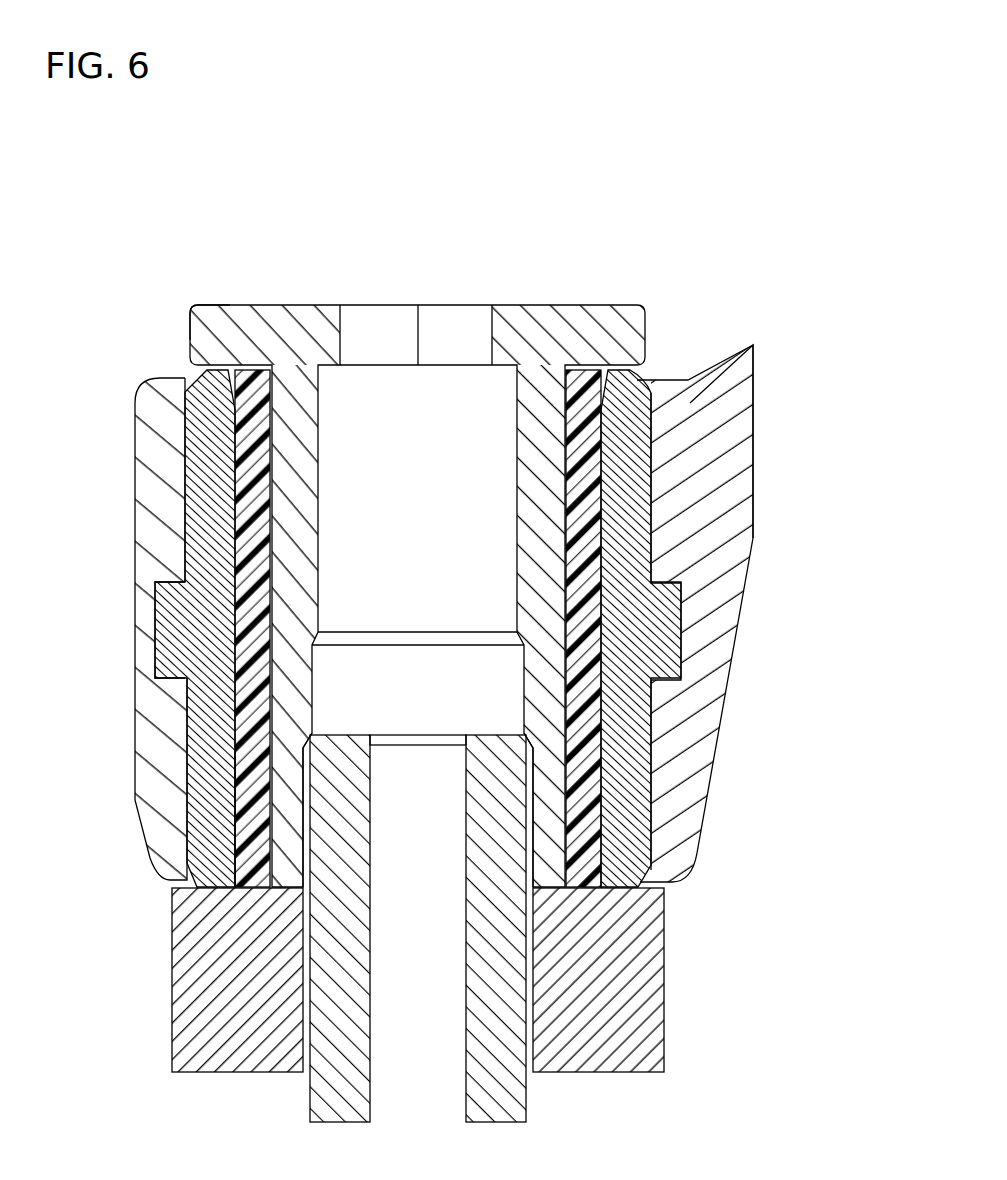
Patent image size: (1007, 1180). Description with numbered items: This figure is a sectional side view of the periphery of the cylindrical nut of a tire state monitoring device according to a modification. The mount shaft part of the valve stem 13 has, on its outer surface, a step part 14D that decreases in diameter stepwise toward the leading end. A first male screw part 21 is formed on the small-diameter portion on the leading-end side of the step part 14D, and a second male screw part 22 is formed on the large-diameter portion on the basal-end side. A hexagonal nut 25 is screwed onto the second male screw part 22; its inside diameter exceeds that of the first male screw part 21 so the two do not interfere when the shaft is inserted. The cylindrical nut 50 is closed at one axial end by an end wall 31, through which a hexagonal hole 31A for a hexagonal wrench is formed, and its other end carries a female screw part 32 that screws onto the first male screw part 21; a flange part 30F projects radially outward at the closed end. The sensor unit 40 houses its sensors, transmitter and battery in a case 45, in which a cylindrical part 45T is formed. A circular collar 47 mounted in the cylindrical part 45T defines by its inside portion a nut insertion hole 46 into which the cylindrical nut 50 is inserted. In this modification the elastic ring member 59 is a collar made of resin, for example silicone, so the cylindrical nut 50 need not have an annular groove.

The valve stem 13 is at (500, 1087).
The step part 14D is at (533, 880).
The first male screw part 21 is at (300, 800).
The second male screw part 22 is at (303, 1033).
The hexagonal nut 25 is at (200, 1000).
The flange part 30F is at (190, 302).
The end wall 31 is at (520, 330).
The hexagonal hole 31A is at (470, 330).
The female screw part 32 is at (237, 800).
The sensor unit 40 is at (752, 345).
The case 45 is at (685, 430).
The cylindrical part 45T is at (165, 705).
The nut insertion hole 46 is at (598, 430).
The circular collar 47 is at (200, 407).
The cylindrical nut 50 is at (298, 302).
The elastic ring member 59 is at (232, 505).